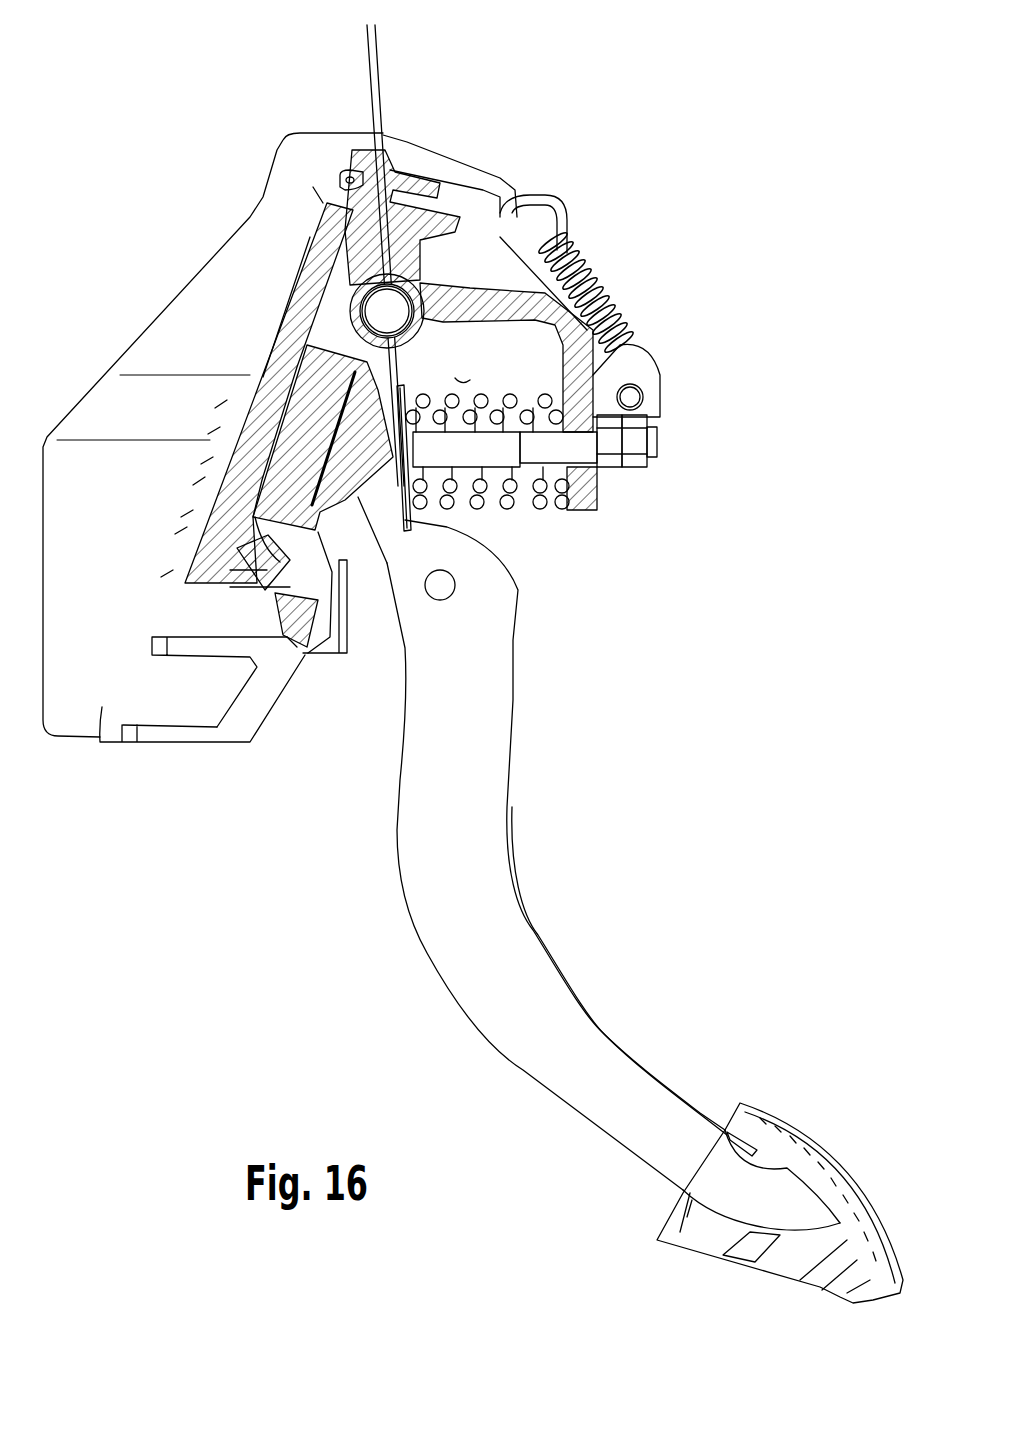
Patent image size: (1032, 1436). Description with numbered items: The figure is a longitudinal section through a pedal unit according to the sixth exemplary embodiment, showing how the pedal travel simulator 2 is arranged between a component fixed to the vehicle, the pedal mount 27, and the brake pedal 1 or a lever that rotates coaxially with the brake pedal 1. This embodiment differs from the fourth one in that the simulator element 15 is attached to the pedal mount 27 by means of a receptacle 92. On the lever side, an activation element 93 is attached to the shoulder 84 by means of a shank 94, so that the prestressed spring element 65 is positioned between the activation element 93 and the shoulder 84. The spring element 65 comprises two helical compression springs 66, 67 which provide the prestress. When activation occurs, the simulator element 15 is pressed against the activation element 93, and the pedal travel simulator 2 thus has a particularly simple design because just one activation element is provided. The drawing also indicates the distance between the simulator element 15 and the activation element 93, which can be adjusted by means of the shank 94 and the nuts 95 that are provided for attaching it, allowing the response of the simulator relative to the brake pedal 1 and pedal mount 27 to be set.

The brake pedal 1 is at (540, 1017).
The pedal travel simulator 2 is at (390, 500).
The simulator element 15 is at (352, 425).
The pedal mount 27 is at (223, 732).
The spring element 65 is at (491, 380).
The helical compression spring 66 is at (588, 328).
The helical compression spring 67 is at (545, 410).
The shoulder 84 is at (537, 388).
The receptacle 92 is at (287, 480).
The activation element 93 is at (413, 522).
The shank 94 is at (457, 460).
The nuts 95 is at (637, 463).